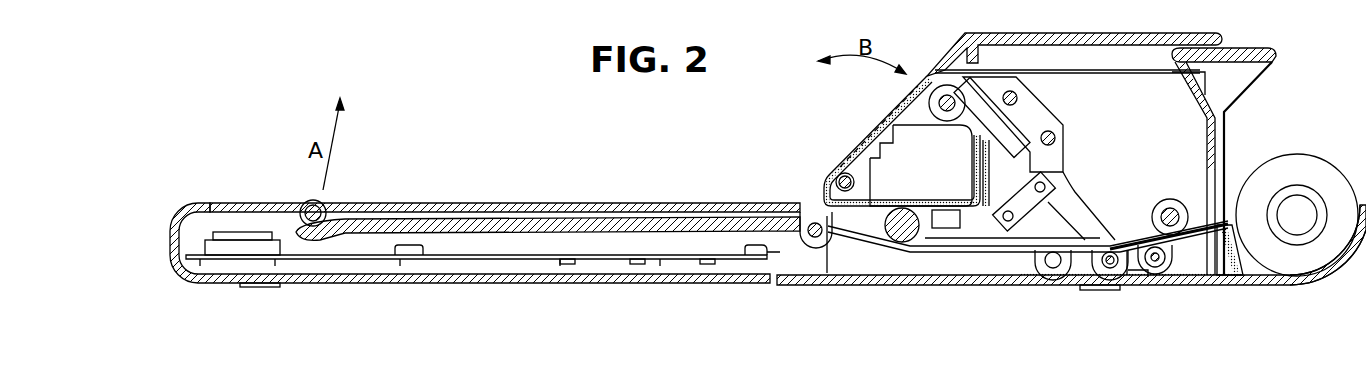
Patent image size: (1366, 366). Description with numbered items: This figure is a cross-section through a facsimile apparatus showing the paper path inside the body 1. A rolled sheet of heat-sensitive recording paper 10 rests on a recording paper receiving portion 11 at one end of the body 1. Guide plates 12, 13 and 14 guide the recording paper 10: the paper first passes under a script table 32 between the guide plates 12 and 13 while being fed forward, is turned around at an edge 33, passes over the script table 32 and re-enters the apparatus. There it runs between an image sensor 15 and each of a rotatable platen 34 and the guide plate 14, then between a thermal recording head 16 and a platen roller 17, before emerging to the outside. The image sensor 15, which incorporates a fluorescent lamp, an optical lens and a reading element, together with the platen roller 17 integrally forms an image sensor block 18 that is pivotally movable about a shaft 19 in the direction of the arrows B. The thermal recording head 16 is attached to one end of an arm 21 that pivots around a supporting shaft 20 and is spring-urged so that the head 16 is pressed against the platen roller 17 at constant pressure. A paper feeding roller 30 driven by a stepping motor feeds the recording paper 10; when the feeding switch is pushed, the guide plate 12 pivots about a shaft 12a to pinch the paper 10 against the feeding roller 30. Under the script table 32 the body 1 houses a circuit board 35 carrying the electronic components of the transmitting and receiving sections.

The body 1 is at (1012, 286).
The heat-sensitive recording paper 10 is at (1310, 170).
The recording paper receiving portion 11 is at (1330, 286).
The guide plate 12 is at (1192, 242).
The shaft 12a is at (1155, 268).
The guide plate 13 is at (1135, 232).
The guide plate 14 is at (972, 210).
The image sensor 15 is at (930, 180).
The thermal recording head 16 is at (978, 87).
The platen roller 17 is at (944, 96).
The image sensor block 18 is at (885, 145).
The shaft 19 is at (836, 180).
The supporting shaft 20 is at (1056, 134).
The arm 21 is at (1030, 107).
The paper feeding roller 30 is at (1167, 199).
The script table 32 is at (423, 201).
The edge 33 is at (322, 208).
The rotatable platen 34 is at (901, 243).
The circuit board 35 is at (485, 262).